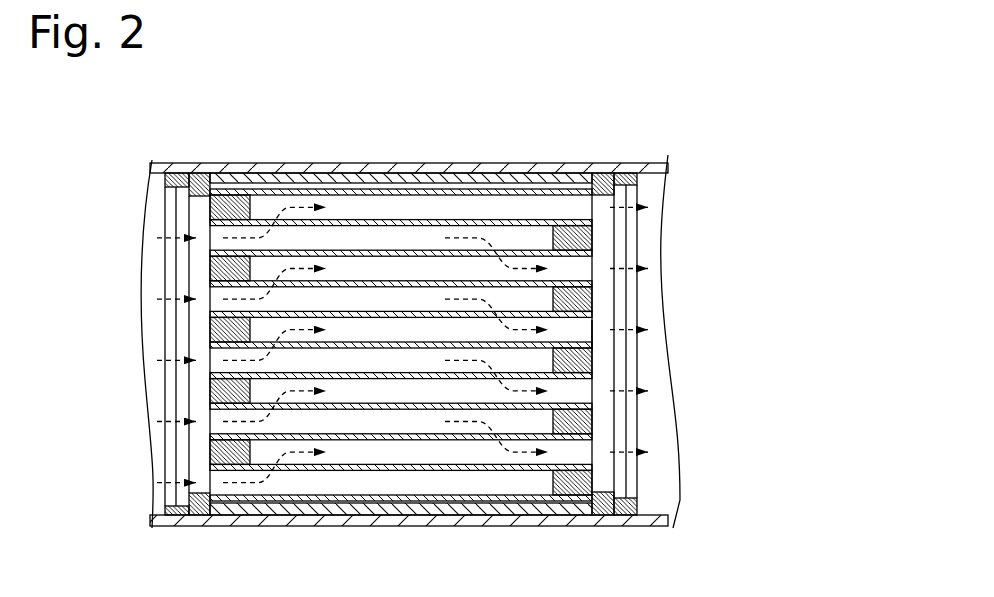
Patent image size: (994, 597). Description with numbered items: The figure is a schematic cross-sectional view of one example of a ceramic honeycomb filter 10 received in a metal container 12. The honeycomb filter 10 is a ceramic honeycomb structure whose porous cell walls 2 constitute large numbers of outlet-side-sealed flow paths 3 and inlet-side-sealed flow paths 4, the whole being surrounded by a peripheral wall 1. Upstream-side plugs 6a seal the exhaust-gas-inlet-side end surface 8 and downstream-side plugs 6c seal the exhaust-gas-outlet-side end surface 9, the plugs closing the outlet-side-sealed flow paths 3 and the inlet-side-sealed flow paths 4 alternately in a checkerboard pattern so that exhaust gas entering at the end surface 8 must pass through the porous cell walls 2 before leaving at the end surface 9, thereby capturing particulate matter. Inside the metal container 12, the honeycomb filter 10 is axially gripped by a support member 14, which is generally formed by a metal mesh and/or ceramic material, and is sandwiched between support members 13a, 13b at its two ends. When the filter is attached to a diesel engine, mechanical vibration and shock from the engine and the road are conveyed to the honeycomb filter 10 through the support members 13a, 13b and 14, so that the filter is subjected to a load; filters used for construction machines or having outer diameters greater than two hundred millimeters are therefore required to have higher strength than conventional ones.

The peripheral wall 1 is at (280, 513).
The porous cell walls 2 is at (490, 471).
The outlet-side-sealed flow paths 3 is at (355, 480).
The inlet-side-sealed flow paths 4 is at (417, 452).
The upstream-side plugs 6a is at (210, 268).
The downstream-side plugs 6c is at (593, 292).
The exhaust-gas-inlet-side end surface 8 is at (211, 349).
The exhaust-gas-outlet-side end surface 9 is at (593, 335).
The ceramic honeycomb filter 10 is at (600, 432).
The metal container 12 is at (462, 170).
The support member 13a is at (196, 173).
The support member 13b is at (607, 173).
The support member 14 is at (350, 173).